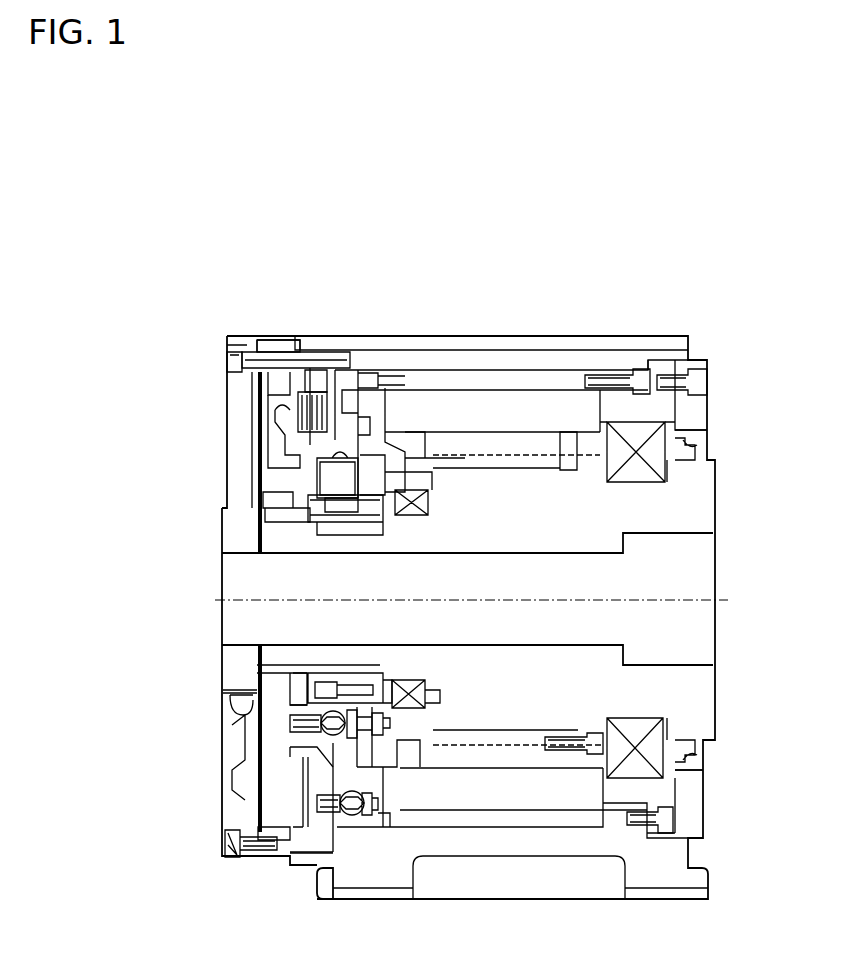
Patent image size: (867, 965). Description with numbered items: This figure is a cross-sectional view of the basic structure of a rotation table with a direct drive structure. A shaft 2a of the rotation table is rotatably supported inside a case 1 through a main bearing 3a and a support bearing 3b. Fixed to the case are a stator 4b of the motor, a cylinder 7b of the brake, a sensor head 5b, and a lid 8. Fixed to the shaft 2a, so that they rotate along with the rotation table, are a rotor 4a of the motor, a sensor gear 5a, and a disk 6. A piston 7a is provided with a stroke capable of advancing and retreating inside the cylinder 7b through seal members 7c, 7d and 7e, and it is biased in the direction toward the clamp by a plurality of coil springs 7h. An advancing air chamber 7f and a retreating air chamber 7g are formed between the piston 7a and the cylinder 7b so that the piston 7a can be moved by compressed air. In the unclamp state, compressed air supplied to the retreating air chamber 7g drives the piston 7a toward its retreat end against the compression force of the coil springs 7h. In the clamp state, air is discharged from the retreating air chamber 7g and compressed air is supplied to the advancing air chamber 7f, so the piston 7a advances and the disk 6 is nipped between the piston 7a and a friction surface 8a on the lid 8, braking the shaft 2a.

The case 1 is at (681, 881).
The shaft 2a is at (680, 697).
The main bearing 3a is at (640, 482).
The support bearing 3b is at (402, 372).
The rotor 4a is at (547, 447).
The stator 4b is at (490, 405).
The sensor gear 5a is at (350, 531).
The sensor head 5b is at (300, 508).
The disk 6 is at (262, 470).
The piston 7a is at (225, 337).
The cylinder 7b is at (262, 340).
The seal member 7c is at (247, 368).
The seal member 7d is at (257, 417).
The seal member 7e is at (257, 450).
The advancing air chamber 7f is at (285, 840).
The retreating air chamber 7g is at (255, 730).
The coil spring 7h is at (296, 350).
The lid 8 is at (267, 790).
The friction surface 8a is at (262, 825).